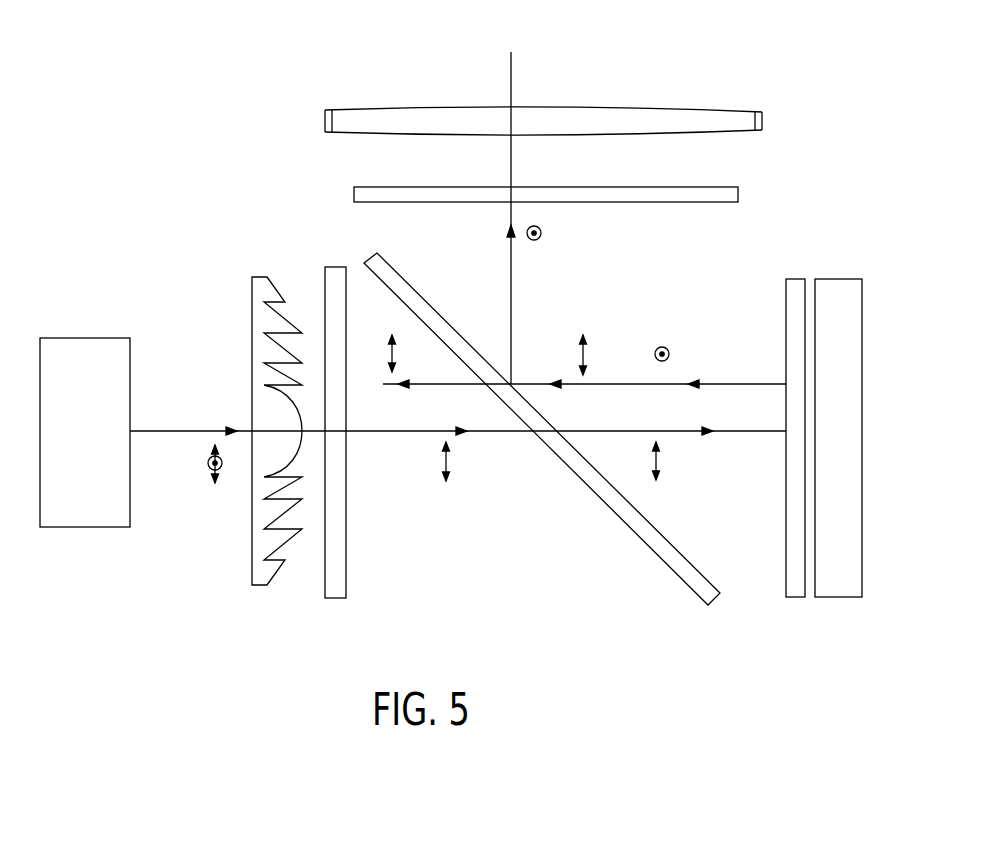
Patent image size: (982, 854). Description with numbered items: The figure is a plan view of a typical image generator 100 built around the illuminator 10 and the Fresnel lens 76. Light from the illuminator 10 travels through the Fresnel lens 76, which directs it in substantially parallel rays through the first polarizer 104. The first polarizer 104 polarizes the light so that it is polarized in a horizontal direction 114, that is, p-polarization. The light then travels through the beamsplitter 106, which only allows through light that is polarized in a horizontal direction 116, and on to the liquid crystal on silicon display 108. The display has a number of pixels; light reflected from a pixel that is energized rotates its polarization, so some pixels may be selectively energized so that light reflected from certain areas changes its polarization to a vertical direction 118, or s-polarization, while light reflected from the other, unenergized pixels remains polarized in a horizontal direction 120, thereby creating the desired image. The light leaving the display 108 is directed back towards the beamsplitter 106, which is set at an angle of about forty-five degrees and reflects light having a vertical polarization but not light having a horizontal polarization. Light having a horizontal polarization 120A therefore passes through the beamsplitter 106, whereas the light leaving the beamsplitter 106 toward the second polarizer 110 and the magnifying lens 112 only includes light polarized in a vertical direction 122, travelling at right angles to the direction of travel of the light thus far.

The image generator 100 is at (246, 69).
The illuminator 10 is at (130, 357).
The Fresnel lens 76 is at (257, 275).
The first polarizer 104 is at (346, 563).
The beamsplitter 106 is at (675, 545).
The liquid crystal on silicon (LCOS) display 108 is at (840, 597).
The second polarizer 110 is at (738, 196).
The magnifying lens 112 is at (762, 121).
The horizontal direction 114 is at (450, 459).
The horizontal direction 116 is at (659, 460).
The vertical direction 118 is at (646, 343).
The horizontal direction 120 is at (564, 355).
The horizontal polarization 120A is at (414, 353).
The vertical direction 122 is at (552, 239).